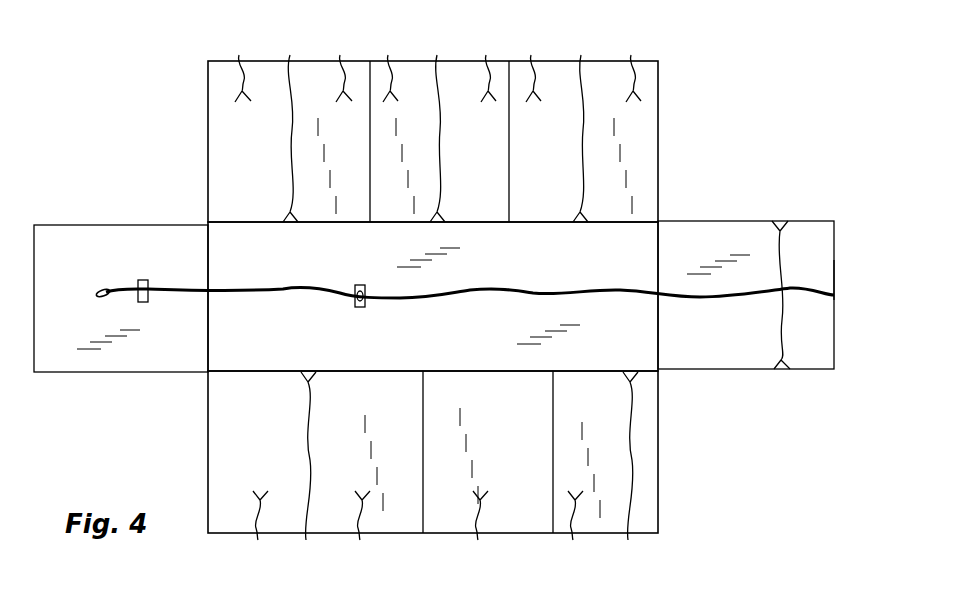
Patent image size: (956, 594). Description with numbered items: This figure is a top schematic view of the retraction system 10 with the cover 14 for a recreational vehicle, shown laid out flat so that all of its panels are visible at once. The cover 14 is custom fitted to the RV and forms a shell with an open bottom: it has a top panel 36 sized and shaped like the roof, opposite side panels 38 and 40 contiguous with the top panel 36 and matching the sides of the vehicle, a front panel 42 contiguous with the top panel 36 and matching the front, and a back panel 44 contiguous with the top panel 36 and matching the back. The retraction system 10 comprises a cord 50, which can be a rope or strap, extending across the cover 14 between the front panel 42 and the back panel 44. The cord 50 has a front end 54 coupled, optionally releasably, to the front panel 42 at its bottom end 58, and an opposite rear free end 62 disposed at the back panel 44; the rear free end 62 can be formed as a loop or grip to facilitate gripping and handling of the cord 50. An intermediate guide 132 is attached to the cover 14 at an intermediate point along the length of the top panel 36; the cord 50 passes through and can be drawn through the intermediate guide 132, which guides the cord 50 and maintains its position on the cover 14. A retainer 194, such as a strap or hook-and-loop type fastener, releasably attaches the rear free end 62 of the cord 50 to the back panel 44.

The retraction system 10 is at (279, 281).
The cover 14 is at (668, 214).
The top panel 36 is at (254, 342).
The side panel 38 is at (232, 125).
The side panel 40 is at (240, 450).
The front panel 42 is at (723, 352).
The back panel 44 is at (113, 237).
The cord 50 is at (533, 293).
The front end 54 is at (798, 288).
The bottom end 58 is at (834, 280).
The rear free end 62 is at (100, 296).
The intermediate guide 132 is at (360, 285).
The retainer 194 is at (145, 302).